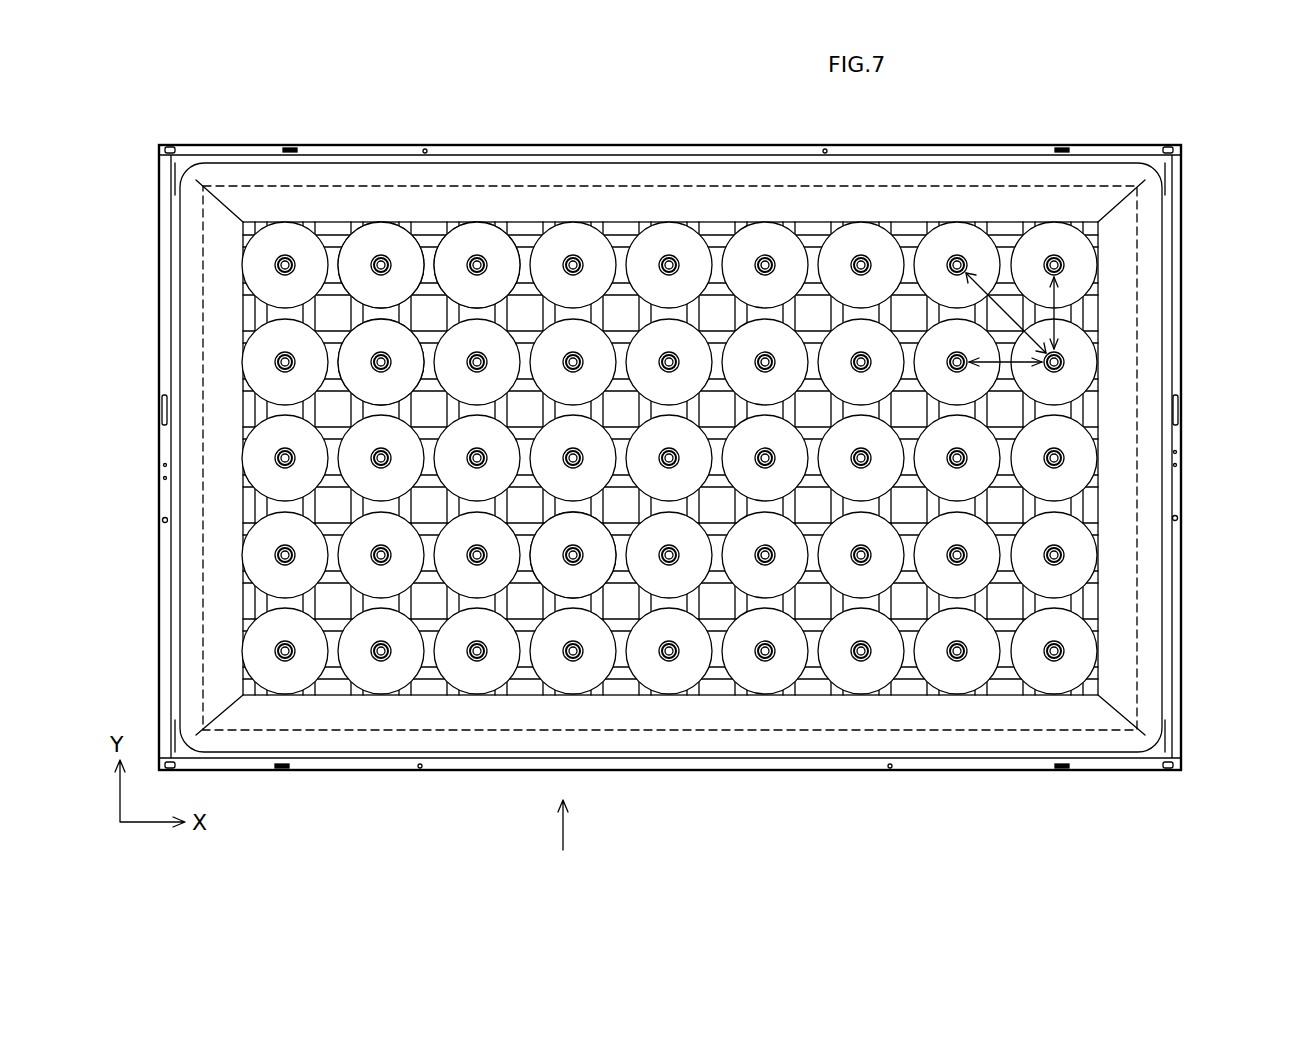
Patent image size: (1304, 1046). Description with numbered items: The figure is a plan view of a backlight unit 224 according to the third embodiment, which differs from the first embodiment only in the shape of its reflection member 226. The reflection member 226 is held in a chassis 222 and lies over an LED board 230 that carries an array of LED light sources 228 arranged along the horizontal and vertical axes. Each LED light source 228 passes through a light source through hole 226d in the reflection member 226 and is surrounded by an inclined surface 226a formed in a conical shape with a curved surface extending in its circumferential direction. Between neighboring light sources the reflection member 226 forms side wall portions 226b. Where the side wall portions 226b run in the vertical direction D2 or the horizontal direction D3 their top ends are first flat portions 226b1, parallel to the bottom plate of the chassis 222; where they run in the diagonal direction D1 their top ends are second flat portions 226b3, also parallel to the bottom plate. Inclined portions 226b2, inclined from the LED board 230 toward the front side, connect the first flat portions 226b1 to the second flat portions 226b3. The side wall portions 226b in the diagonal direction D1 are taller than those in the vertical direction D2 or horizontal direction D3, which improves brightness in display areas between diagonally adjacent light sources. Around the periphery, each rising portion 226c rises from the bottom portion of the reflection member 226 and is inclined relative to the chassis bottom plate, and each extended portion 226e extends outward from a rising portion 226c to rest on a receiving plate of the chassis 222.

The chassis 222 is at (1180, 668).
The backlight unit 224 is at (564, 847).
The reflection member 226 is at (557, 100).
The inclined surface 226a is at (407, 668).
The side wall portion 226b is at (262, 315).
The first flat portion 226b1 is at (380, 315).
The inclined portion 226b2 is at (402, 312).
The second flat portion 226b3 is at (432, 305).
The rising portion 226c is at (222, 360).
The light source through hole 226d is at (555, 557).
The extended portion 226e is at (172, 568).
The LED light source 228 is at (285, 661).
The LED board 230 is at (222, 185).
The diagonal direction D1 is at (1008, 300).
The vertical direction D2 is at (1045, 320).
The horizontal direction D3 is at (1015, 378).